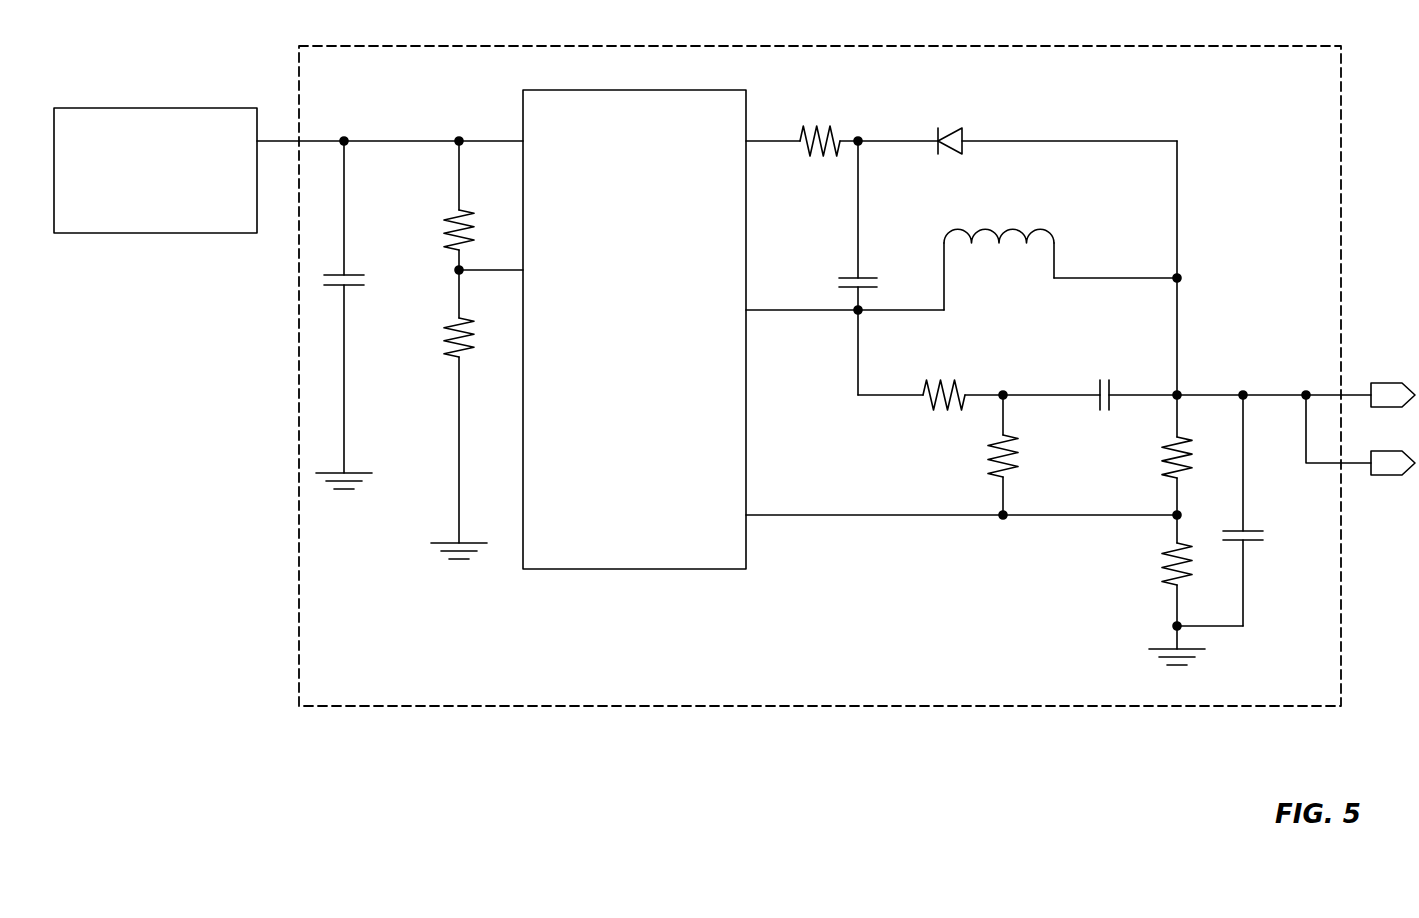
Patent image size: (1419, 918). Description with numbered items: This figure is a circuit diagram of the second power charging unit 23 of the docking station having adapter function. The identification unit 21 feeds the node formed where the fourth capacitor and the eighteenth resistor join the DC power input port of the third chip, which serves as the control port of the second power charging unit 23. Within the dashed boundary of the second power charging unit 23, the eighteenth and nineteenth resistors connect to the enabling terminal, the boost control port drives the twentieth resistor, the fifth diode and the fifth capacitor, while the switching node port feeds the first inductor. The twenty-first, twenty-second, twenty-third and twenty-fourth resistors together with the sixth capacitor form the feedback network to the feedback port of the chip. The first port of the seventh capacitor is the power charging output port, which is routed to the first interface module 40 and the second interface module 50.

The identification unit 21 is at (155, 170).
The second power charging unit 23 is at (347, 686).
The first interface module 40 is at (1393, 376).
The second interface module 50 is at (1360, 455).